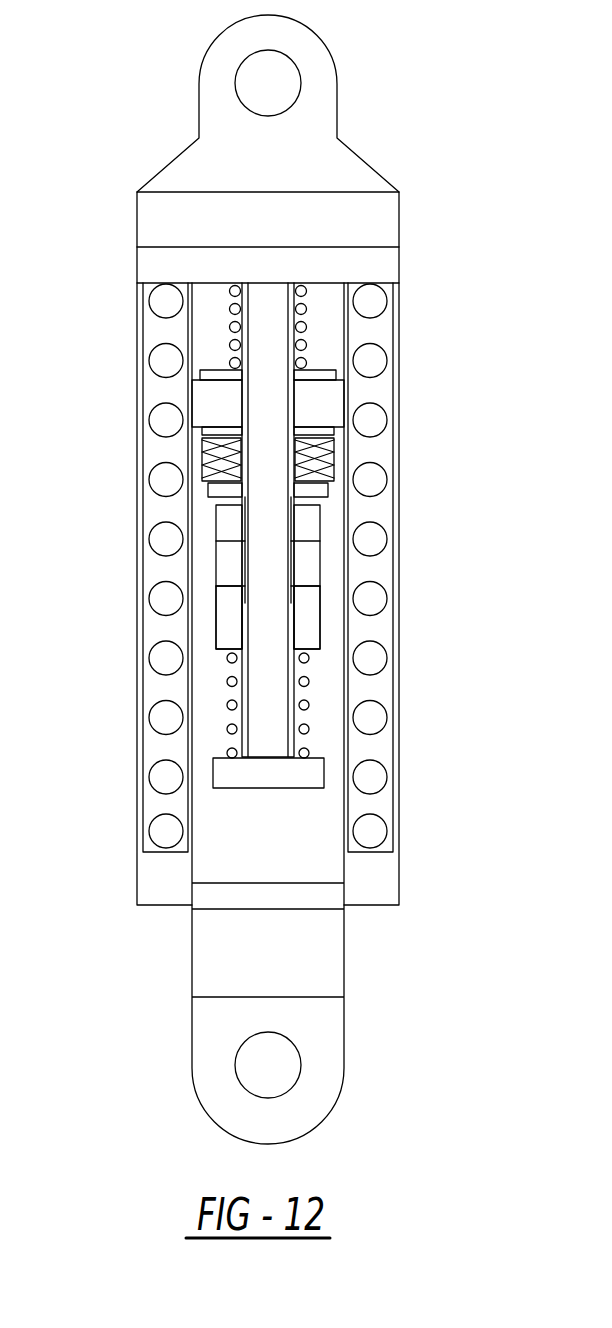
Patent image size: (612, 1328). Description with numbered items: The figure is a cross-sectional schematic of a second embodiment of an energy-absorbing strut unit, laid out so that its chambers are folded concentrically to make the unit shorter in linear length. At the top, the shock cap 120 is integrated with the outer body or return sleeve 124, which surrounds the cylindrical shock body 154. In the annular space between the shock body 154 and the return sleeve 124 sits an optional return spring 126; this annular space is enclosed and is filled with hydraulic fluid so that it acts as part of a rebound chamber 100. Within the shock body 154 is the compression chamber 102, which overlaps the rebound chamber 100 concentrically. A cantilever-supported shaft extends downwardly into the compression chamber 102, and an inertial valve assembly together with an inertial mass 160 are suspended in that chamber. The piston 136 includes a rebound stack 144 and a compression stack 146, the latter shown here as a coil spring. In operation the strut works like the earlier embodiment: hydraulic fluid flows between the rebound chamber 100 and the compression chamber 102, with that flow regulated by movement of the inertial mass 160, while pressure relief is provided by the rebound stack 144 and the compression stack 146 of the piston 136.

The rebound chamber 100 is at (162, 389).
The compression chamber 102 is at (250, 830).
The shock cap 120 is at (337, 62).
The return sleeve 124 is at (400, 385).
The return spring 126 is at (370, 718).
The piston 136 is at (328, 409).
The rebound stack 144 is at (213, 458).
The compression stack 146 is at (305, 345).
The shock body 154 is at (352, 509).
The inertial mass 160 is at (307, 622).